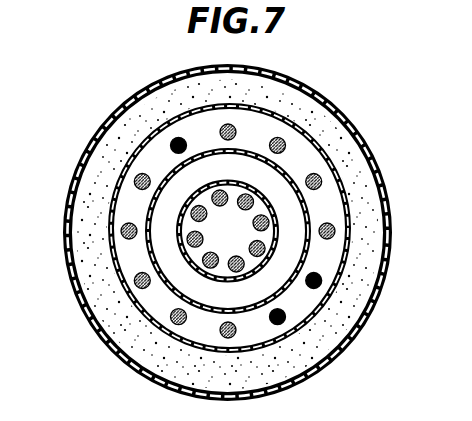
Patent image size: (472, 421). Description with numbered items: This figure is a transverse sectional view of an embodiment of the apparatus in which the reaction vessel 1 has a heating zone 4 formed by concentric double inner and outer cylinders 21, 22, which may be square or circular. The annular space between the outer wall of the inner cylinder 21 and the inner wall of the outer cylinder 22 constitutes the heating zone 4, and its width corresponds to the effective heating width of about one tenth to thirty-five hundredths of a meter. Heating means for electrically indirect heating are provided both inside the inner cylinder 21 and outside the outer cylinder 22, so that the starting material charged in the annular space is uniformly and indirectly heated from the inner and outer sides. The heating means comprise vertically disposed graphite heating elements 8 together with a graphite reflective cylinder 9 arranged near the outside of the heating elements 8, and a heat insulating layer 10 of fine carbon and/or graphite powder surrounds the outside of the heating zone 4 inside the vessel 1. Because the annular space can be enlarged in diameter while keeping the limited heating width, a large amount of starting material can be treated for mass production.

The reaction vessel 1 is at (342, 31).
The heating zone 4 is at (168, 214).
The graphite heating elements 8 is at (121, 230).
The graphite reflective cylinder 9 is at (290, 118).
The heat insulating layer 10 is at (112, 140).
The inner cylinder 21 is at (277, 212).
The outer cylinder 22 is at (293, 287).